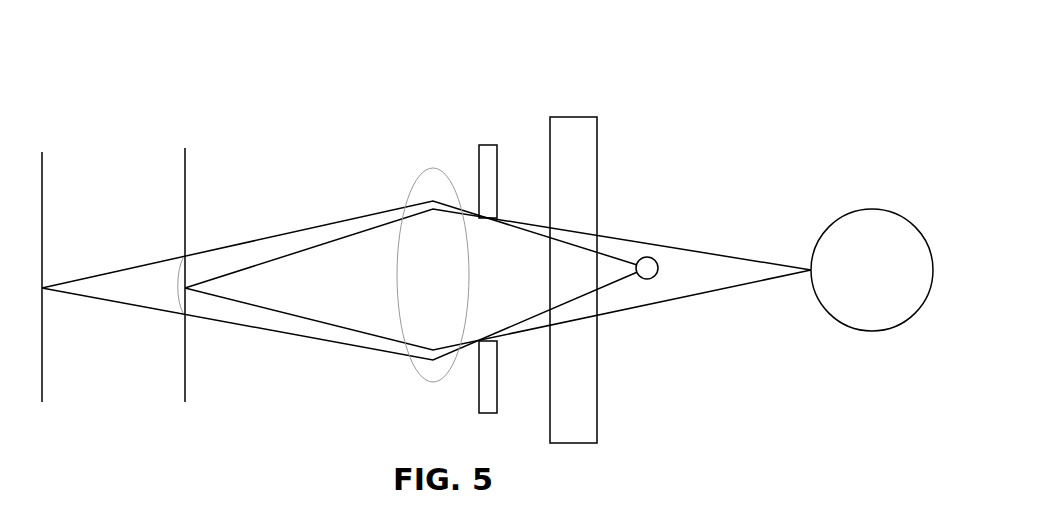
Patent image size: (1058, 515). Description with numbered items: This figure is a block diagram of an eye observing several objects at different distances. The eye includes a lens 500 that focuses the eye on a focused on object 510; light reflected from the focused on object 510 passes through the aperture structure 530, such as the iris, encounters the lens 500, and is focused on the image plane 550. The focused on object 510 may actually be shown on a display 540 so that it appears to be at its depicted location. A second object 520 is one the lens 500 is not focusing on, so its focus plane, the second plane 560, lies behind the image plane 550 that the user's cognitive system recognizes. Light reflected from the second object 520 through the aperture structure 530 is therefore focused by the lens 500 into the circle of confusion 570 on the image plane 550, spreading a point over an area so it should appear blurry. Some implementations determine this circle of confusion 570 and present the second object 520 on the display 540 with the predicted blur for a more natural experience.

The lens 500 is at (451, 298).
The focused on object 510 is at (853, 315).
The second object 520 is at (650, 257).
The aperture structure 530 is at (487, 145).
The display 540 is at (597, 418).
The image plane 550 is at (185, 178).
The second plane 560 is at (42, 178).
The circle of confusion 570 is at (177, 283).